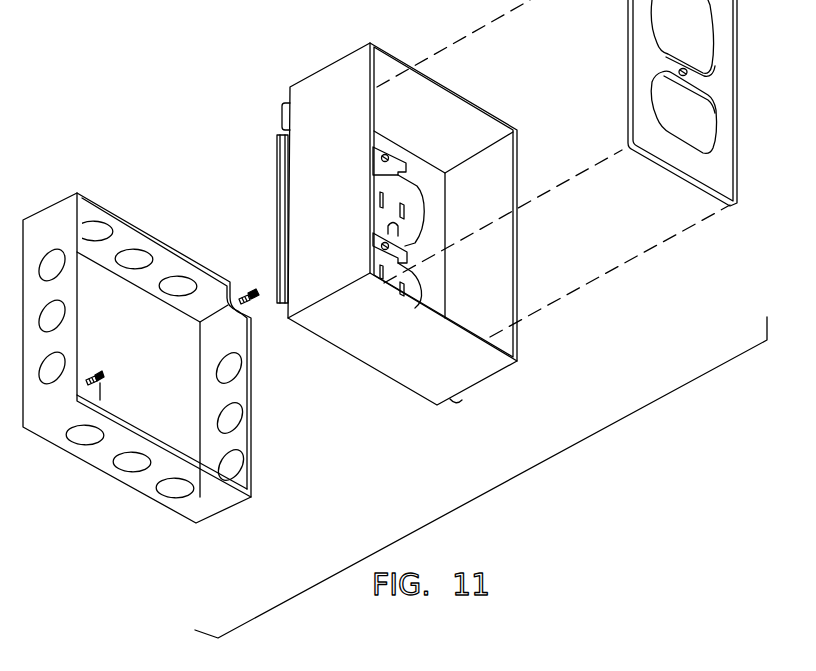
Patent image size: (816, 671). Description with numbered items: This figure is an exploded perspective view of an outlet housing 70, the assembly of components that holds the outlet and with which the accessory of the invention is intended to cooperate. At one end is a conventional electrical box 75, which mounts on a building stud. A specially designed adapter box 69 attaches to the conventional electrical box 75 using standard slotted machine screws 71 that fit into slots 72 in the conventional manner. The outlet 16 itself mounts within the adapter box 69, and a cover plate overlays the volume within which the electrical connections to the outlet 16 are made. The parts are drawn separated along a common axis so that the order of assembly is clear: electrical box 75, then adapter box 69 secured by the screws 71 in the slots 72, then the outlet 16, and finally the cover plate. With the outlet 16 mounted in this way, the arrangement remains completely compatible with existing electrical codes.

The outlet housing 70 is at (193, 133).
The slots 72 is at (283, 128).
The slotted machine screws 71 is at (251, 291).
The conventional electrical box 75 is at (253, 430).
The adapter box 69 is at (482, 362).
The outlet 16 is at (415, 222).